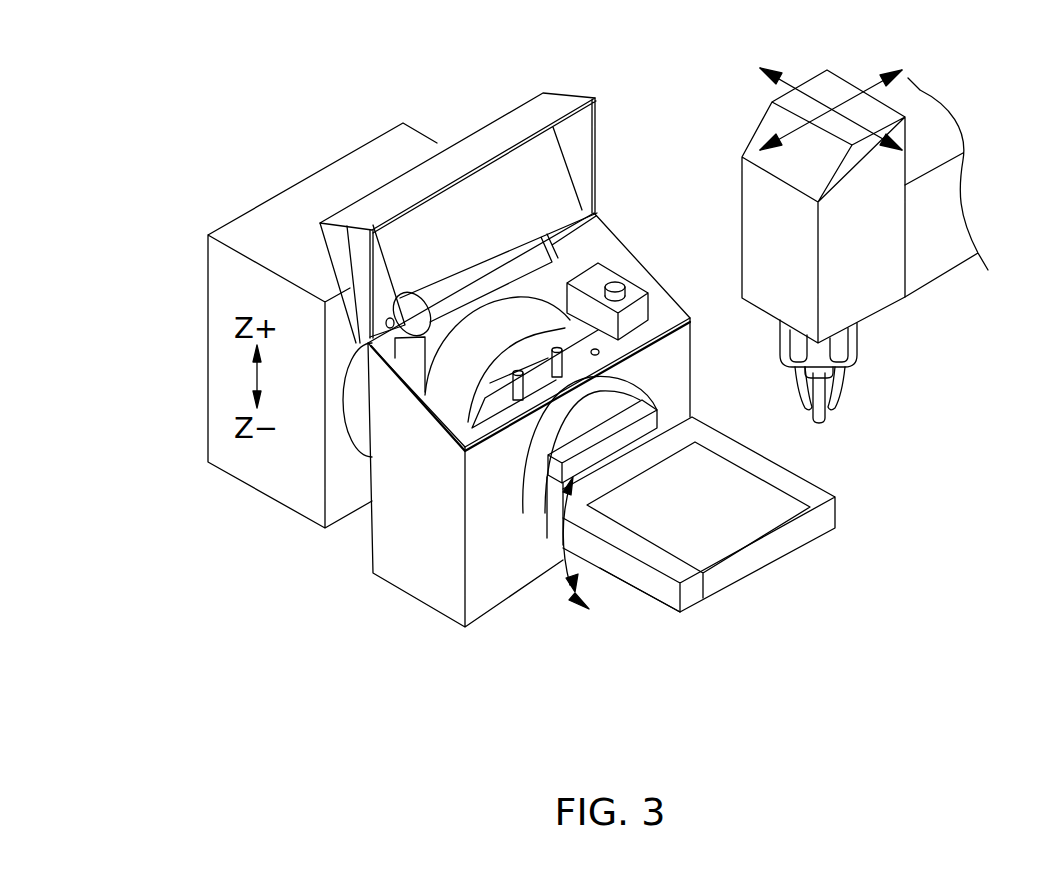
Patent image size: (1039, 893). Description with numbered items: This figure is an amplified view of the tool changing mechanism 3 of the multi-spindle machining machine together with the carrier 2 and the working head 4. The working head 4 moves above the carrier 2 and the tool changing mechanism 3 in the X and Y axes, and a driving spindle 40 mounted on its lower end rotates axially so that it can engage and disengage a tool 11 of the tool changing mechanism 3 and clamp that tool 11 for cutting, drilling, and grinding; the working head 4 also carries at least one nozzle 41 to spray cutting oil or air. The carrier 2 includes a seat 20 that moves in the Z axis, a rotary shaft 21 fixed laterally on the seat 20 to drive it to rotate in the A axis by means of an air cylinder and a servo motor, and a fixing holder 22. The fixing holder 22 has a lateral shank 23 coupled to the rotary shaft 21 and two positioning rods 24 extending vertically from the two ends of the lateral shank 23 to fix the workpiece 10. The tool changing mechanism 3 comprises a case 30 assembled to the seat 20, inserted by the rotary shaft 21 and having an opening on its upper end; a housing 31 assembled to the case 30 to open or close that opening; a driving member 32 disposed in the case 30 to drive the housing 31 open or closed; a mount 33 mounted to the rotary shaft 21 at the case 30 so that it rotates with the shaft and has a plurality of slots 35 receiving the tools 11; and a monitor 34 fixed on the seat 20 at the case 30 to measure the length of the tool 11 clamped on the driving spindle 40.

The carrier 2 is at (750, 537).
The tool changing mechanism 3 is at (553, 375).
The working head 4 is at (883, 250).
The workpiece 10 is at (757, 563).
The tool 11 is at (558, 347).
The seat 20 is at (355, 408).
The rotary shaft 21 is at (533, 500).
The fixing holder 22 is at (570, 613).
The lateral shank 23 is at (622, 472).
The positioning rod 24 is at (663, 592).
The case 30 is at (425, 592).
The housing 31 is at (502, 126).
The driving member 32 is at (390, 397).
The mount 33 is at (588, 367).
The monitor 34 is at (623, 287).
The slot 35 is at (600, 353).
The driving spindle 40 is at (853, 335).
The nozzle 41 is at (837, 380).